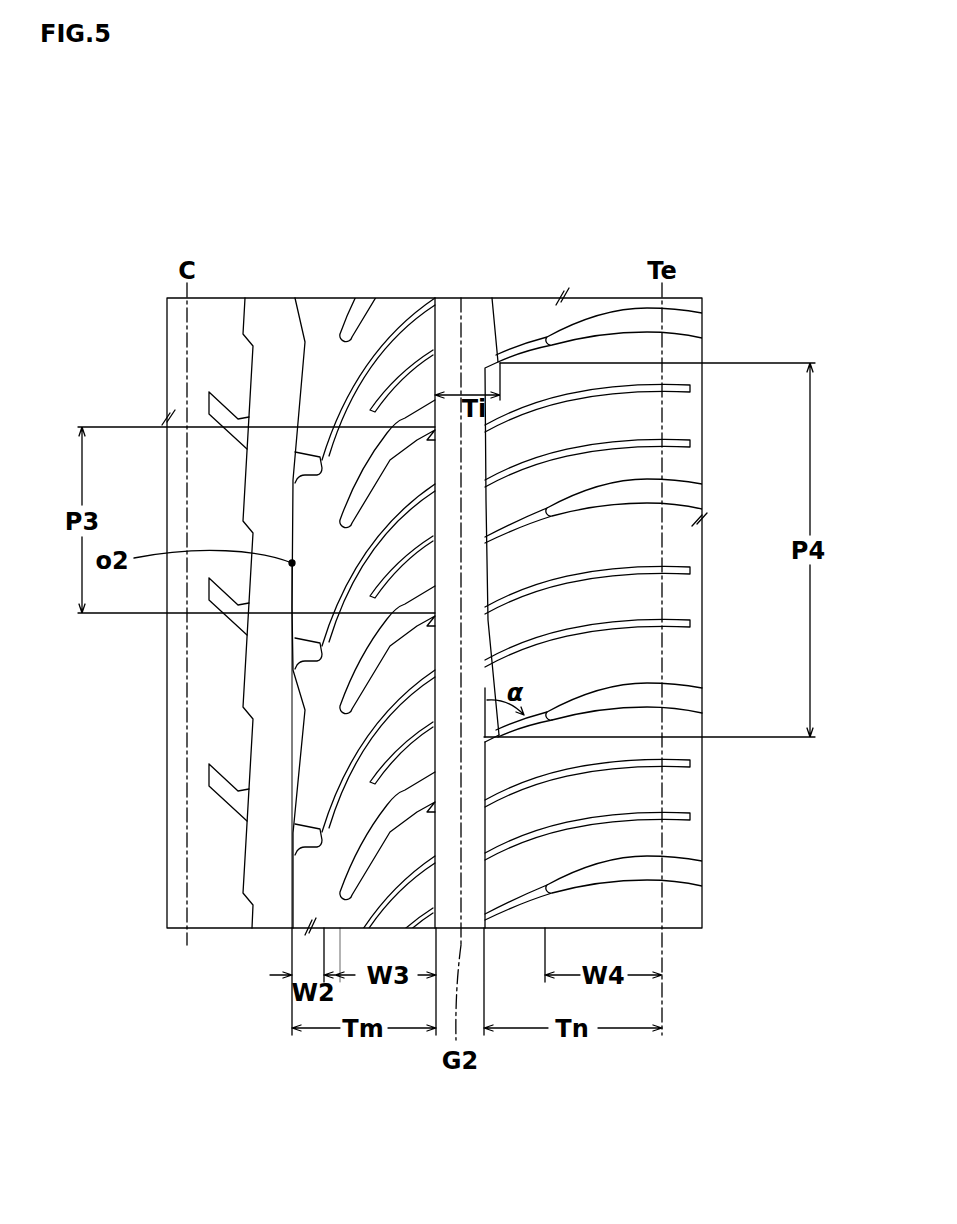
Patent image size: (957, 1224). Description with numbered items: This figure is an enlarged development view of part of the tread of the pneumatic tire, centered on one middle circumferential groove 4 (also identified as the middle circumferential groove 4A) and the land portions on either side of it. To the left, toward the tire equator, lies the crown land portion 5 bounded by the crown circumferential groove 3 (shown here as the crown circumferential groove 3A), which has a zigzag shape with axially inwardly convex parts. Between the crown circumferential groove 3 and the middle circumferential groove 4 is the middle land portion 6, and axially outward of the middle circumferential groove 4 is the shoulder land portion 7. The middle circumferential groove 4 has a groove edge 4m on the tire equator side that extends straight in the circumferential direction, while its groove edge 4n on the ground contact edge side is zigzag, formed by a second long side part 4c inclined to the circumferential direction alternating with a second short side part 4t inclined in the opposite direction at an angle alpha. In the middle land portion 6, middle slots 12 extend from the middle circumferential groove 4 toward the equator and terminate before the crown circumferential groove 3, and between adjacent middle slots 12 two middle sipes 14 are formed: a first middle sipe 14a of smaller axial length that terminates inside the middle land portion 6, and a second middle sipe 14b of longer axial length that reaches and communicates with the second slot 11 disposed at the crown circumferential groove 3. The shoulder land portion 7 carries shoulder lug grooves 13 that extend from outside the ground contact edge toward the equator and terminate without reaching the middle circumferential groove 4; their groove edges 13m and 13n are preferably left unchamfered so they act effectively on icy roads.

The crown circumferential groove 3 is at (277, 318).
The crown circumferential groove 3A is at (275, 566).
The middle circumferential groove 4 is at (468, 325).
The middle circumferential groove 4A is at (603, 548).
The groove edge on tire equator side 4m is at (437, 316).
The groove edge on ground contact edge side 4n is at (494, 322).
The second short side part 4t is at (490, 740).
The second long side part 4c is at (480, 815).
The crown land portion 5 is at (226, 287).
The middle land portion 6 is at (343, 287).
The shoulder land portion 7 is at (592, 287).
The second slot 11 is at (307, 838).
The middle slot 12 is at (353, 690).
The shoulder lug groove 13 is at (683, 323).
The groove edge 13m is at (636, 700).
The groove edge 13n is at (622, 681).
The middle sipe 14 is at (108, 322).
The first middle sipe 14a is at (407, 370).
The second middle sipe 14b is at (353, 405).